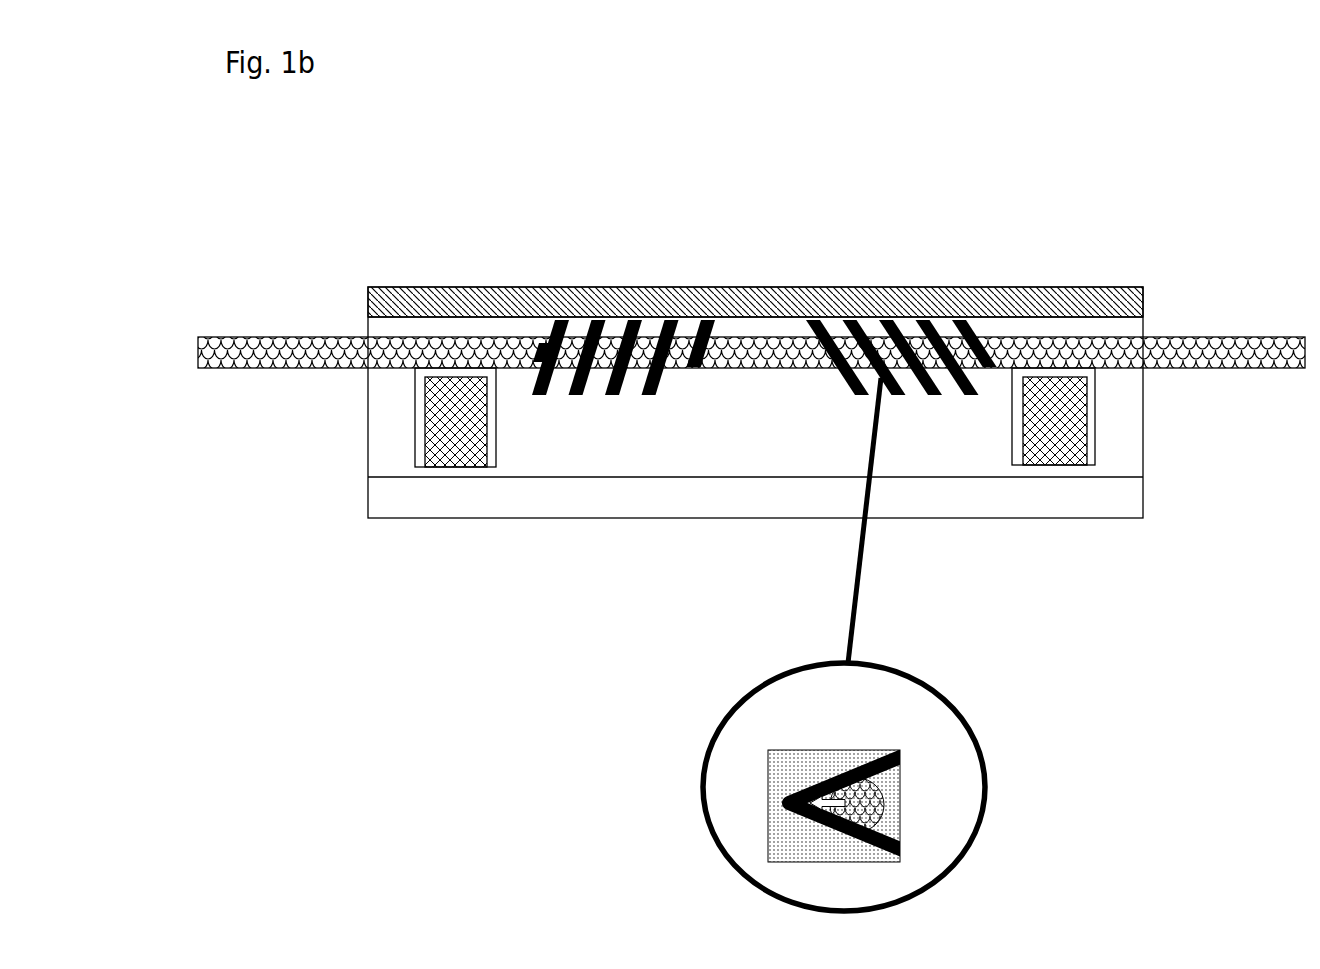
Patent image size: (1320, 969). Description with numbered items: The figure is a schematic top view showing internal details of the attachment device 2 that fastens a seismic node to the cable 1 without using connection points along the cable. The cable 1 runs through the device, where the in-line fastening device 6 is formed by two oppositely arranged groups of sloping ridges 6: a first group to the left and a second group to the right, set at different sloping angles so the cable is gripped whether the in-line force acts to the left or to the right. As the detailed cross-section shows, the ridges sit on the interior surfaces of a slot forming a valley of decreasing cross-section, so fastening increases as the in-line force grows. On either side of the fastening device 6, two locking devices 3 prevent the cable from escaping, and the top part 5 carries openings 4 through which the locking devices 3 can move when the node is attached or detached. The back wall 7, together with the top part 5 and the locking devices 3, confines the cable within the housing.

The cable 1 is at (305, 372).
The attachment device 2 is at (555, 530).
The locking device 3 is at (457, 437).
The opening 4 is at (420, 430).
The top part 5 is at (733, 452).
The in-line fastening device 6 is at (650, 338).
The back wall 7 is at (428, 288).